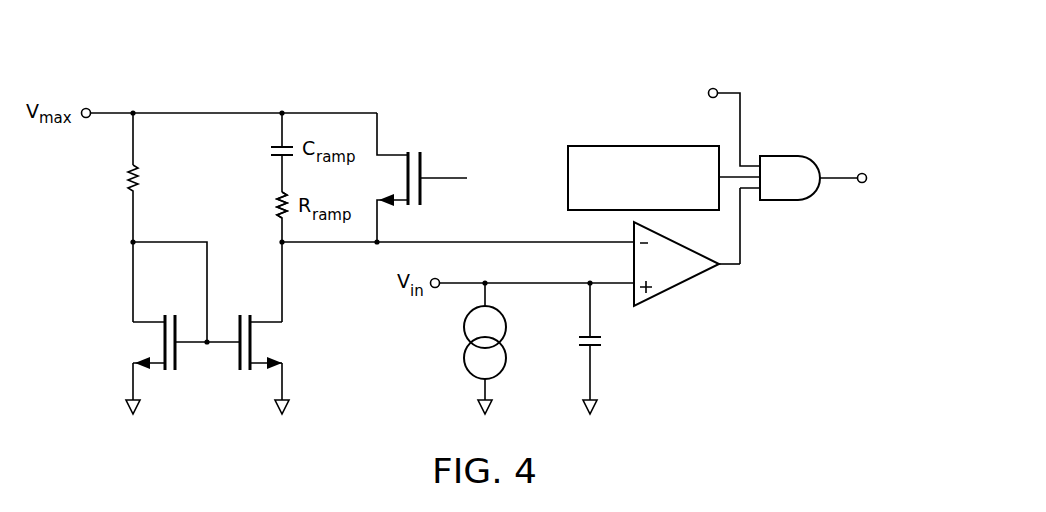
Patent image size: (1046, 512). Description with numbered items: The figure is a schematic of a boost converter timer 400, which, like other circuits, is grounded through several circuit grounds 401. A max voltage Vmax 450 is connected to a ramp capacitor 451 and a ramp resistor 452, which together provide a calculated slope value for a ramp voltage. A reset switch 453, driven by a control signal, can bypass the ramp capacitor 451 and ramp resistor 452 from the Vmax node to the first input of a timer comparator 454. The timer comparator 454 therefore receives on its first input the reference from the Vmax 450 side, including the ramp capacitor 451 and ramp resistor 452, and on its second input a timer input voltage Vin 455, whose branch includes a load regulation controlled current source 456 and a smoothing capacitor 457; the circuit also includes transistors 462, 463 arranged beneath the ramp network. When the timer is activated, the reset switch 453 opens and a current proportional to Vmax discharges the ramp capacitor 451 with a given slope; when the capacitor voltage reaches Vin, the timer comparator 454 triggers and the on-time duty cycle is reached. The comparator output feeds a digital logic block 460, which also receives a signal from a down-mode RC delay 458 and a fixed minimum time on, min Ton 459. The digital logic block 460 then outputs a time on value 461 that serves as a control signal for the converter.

The boost converter timer 400 is at (240, 62).
The circuit ground 401 is at (128, 411).
The max voltage 450 is at (84, 107).
The ramp capacitor 451 is at (270, 152).
The ramp resistor 452 is at (272, 205).
The reset switch 453 is at (430, 166).
The timer comparator 454 is at (672, 289).
The timer input voltage 455 is at (438, 278).
The load regulation controlled current source 456 is at (507, 357).
The smoothing capacitor 457 is at (603, 340).
The down-mode RC delay 458 is at (600, 146).
The fixed minimum time on 459 is at (715, 88).
The digital logic block 460 is at (782, 155).
The time on value 461 is at (864, 184).
The transistor 462 is at (239, 353).
The transistor 463 is at (176, 353).